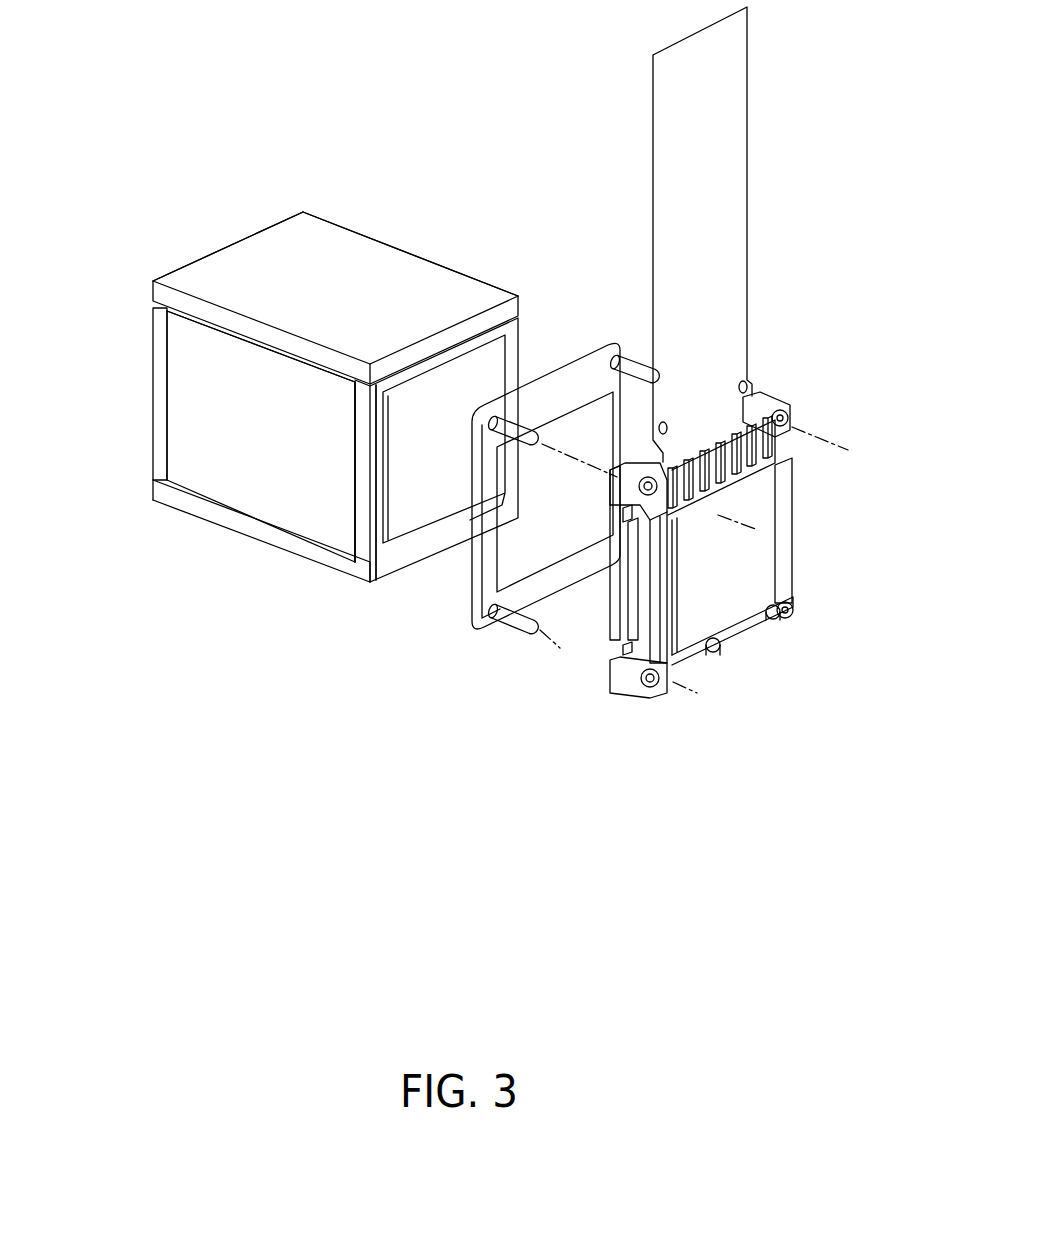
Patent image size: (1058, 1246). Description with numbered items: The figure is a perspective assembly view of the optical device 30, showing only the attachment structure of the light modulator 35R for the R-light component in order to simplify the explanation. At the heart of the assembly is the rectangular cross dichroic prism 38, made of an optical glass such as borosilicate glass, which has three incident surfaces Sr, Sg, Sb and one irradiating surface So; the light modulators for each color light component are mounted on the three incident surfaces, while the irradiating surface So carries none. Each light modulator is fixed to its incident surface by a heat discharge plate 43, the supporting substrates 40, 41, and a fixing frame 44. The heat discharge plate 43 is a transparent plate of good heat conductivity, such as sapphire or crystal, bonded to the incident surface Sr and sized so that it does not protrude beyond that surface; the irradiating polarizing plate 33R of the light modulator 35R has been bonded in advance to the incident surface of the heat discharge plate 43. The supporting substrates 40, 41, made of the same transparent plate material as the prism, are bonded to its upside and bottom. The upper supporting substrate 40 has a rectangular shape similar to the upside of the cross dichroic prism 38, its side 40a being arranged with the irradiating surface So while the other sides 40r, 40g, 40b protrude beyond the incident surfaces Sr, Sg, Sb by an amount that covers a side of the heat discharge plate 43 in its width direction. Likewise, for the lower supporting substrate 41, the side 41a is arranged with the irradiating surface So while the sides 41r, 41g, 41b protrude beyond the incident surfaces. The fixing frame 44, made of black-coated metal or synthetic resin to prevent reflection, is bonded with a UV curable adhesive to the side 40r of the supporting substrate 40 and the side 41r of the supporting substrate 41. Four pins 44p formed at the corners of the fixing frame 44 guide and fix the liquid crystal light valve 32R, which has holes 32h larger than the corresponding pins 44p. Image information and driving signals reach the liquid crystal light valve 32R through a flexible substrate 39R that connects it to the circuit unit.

The optical device 30 is at (472, 176).
The light modulator 35R is at (562, 742).
The irradiating polarizing plate 33R is at (393, 518).
The supporting substrate 40 is at (380, 260).
The side 40a is at (262, 328).
The side 40b is at (212, 252).
The side 40g is at (343, 227).
The side 40r is at (430, 347).
The incident surface Sg is at (460, 297).
The supporting substrate 41 is at (286, 545).
The side 41a is at (172, 500).
The side 41b is at (153, 486).
The side 41r is at (443, 540).
The side 41g is at (518, 510).
The cross dichroic prism 38 is at (176, 357).
The incident surface Sb is at (170, 436).
The incident surface Sr is at (350, 436).
The irradiating surface So is at (226, 490).
The heat discharge plate 43 is at (358, 552).
The fixing frame 44 is at (597, 352).
The pin 44p is at (492, 431).
The flexible cable 39R is at (740, 230).
The liquid crystal light valve 32R is at (612, 668).
The hole 32h is at (677, 527).